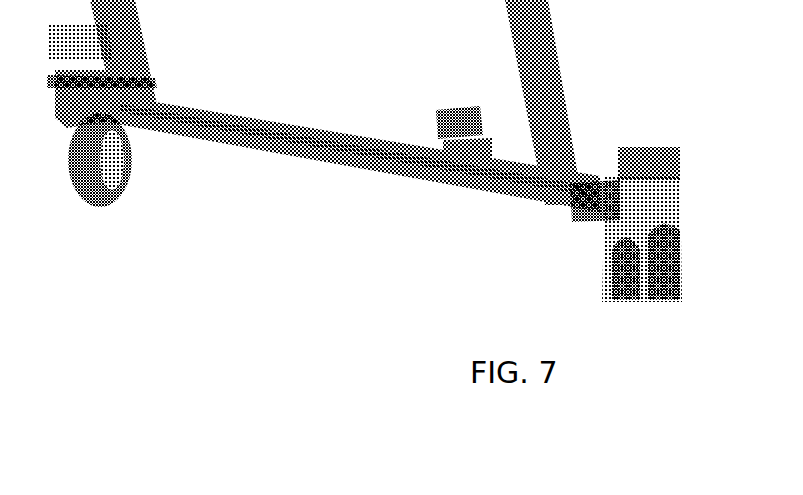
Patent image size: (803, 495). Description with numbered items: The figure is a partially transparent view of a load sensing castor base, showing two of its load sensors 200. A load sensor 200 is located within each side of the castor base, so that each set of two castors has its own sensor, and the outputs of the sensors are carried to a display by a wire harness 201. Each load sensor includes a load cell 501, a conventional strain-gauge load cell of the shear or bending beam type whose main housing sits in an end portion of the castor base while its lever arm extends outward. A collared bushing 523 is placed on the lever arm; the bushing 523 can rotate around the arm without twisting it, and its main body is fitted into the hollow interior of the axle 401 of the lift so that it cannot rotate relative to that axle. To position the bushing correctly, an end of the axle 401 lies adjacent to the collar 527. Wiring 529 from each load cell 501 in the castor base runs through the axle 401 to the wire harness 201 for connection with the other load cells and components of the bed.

The load sensor 200 is at (597, 178).
The wire harness 201 is at (453, 105).
The axle 401 is at (278, 150).
The load cell 501 is at (128, 158).
The collared bushing 523 is at (567, 203).
The collar 527 is at (316, 140).
The wiring 529 is at (502, 187).